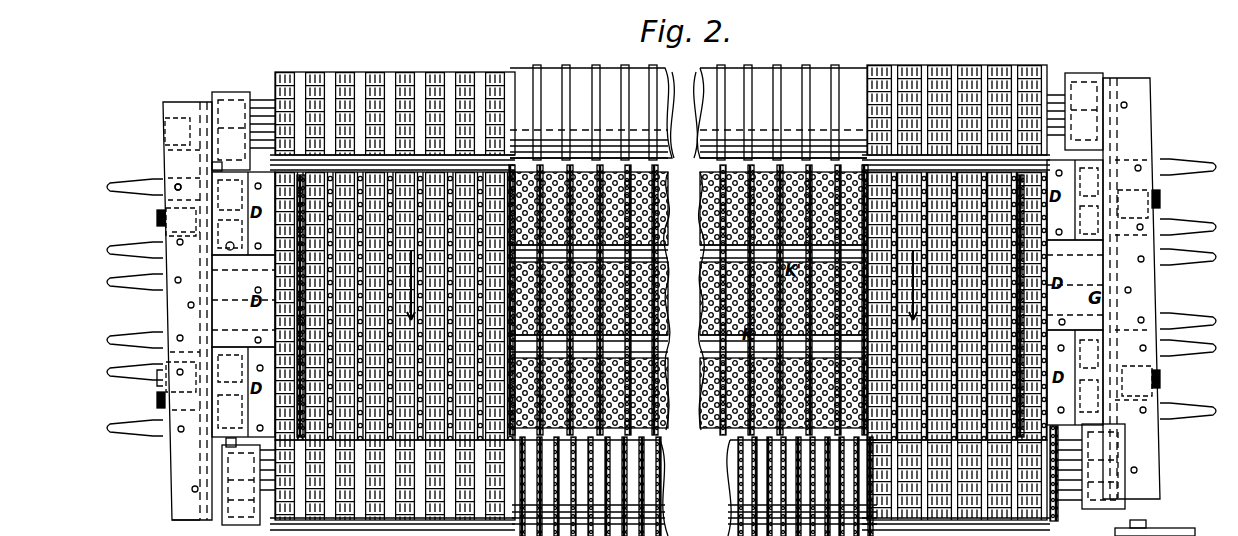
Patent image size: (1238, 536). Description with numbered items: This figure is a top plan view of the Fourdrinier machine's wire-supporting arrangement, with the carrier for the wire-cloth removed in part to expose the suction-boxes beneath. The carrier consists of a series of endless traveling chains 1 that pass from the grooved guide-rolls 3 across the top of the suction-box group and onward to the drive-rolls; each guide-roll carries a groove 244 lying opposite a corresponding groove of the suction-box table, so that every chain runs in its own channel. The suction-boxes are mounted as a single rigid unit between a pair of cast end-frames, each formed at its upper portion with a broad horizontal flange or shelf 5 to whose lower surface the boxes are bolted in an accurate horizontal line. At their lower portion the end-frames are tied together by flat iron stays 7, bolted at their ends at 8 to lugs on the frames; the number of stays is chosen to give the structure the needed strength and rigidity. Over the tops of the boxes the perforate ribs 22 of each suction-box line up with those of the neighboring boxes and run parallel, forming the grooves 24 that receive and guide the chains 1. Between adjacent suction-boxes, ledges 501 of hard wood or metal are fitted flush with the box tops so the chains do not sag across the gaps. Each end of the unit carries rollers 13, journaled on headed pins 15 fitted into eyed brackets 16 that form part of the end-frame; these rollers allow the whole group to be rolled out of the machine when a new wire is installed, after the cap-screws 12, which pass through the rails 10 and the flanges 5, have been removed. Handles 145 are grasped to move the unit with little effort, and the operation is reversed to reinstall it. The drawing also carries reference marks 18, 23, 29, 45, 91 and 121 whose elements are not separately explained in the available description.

The endless traveling chains 1 is at (376, 76).
The groove of the guide-roll 244 is at (550, 78).
The grooved guide-rolls 3 is at (788, 78).
The grooves 24 is at (622, 172).
The stays 7 is at (684, 251).
The perforated plates 18 is at (656, 262).
The ledges 501 is at (688, 299).
The headed pins 15 is at (178, 184).
The end blocks 29 is at (215, 167).
The handles 145 is at (122, 188).
The rollers 13 is at (156, 218).
The pivot 91 is at (178, 336).
The eyed brackets 16 is at (160, 384).
The perforate ribs 22 is at (300, 243).
The roller 23 is at (300, 321).
The bolts 8 is at (659, 299).
The flange 5 is at (180, 478).
The pivot pin 121 is at (192, 491).
The rails 10 is at (165, 522).
The chain strip 45 is at (1060, 510).
The cap-screws 12 is at (1147, 524).